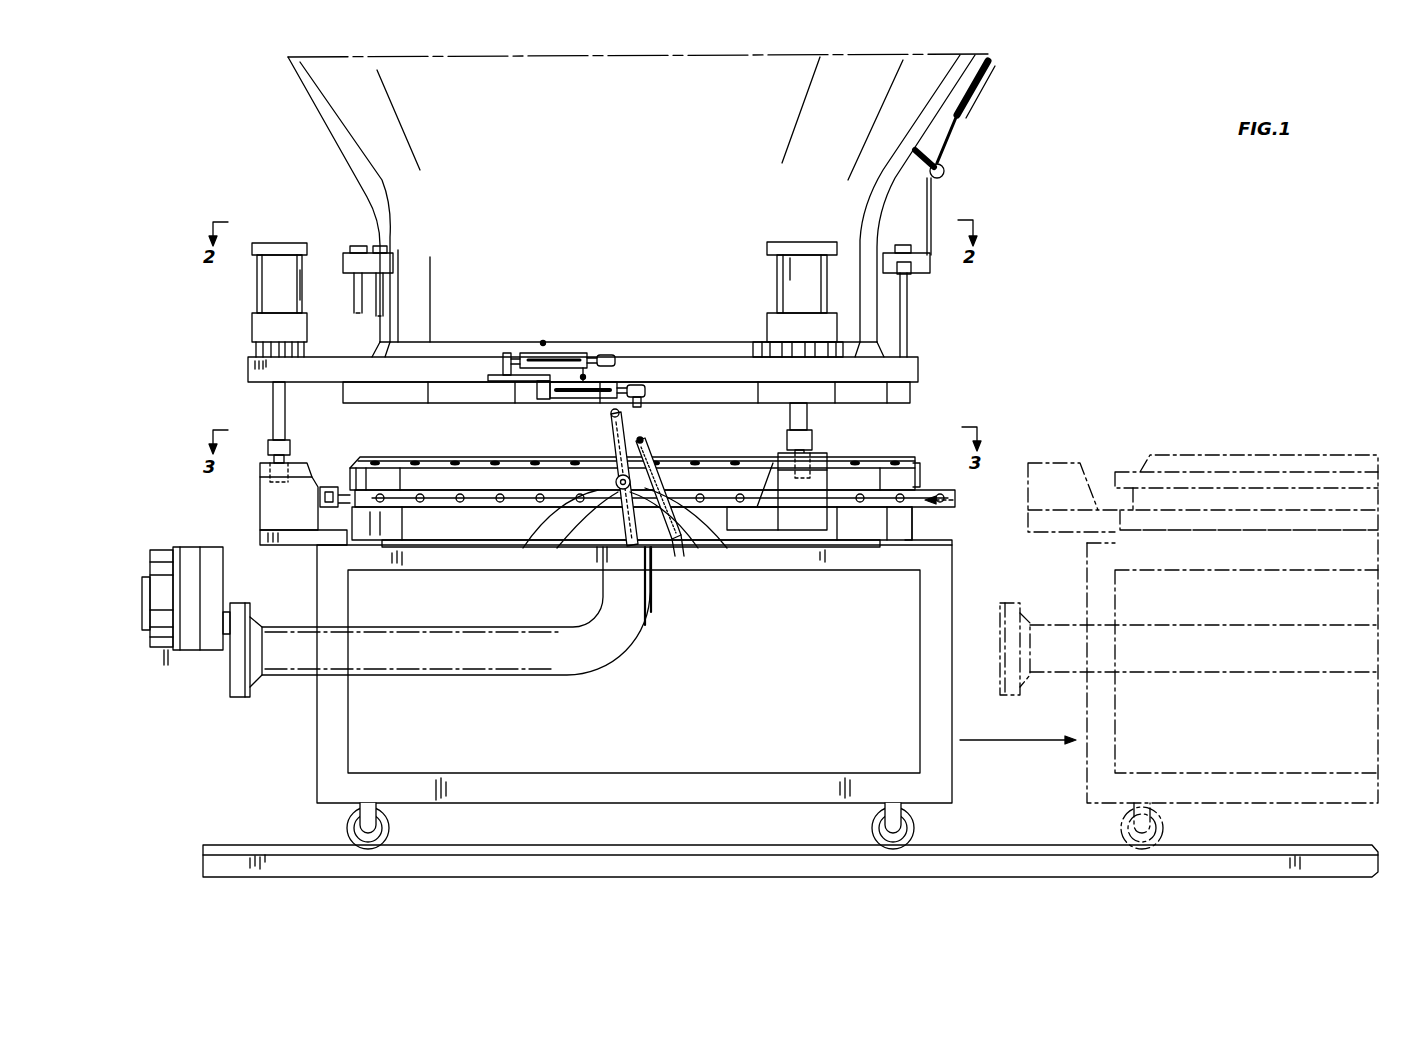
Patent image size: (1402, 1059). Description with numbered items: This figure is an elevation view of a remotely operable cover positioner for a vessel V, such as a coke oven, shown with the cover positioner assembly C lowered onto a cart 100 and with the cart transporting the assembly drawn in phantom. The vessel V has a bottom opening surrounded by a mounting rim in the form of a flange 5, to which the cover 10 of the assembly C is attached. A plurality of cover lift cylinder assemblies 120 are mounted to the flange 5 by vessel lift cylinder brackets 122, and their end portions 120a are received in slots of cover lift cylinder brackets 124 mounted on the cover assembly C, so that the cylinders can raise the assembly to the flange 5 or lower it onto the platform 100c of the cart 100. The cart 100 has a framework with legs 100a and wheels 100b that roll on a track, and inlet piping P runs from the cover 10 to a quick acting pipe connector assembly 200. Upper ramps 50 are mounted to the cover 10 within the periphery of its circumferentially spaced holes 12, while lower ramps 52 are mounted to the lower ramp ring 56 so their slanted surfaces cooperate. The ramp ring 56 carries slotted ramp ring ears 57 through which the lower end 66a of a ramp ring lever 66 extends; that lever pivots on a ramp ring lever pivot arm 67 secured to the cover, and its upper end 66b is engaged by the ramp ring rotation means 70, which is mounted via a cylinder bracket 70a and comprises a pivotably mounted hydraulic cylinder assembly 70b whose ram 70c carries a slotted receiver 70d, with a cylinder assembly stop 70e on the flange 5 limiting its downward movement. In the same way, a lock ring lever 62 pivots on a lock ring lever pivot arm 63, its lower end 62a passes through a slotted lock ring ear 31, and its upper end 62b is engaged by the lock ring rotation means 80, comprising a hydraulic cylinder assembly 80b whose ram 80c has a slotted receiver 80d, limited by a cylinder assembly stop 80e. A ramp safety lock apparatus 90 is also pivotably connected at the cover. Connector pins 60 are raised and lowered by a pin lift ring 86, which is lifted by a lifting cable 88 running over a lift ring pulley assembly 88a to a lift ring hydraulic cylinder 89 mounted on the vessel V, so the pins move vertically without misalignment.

The vessel V is at (295, 84).
The lift ring hydraulic cylinder 89 is at (981, 93).
The lift ring pulley assembly 88a is at (946, 168).
The lift ring lifting cable 88 is at (931, 207).
The pin lift ring 86 is at (345, 262).
The cover lift cylinder assembly 120 is at (250, 306).
The vessel lift cylinder bracket 122 is at (250, 366).
The flange 5 is at (352, 358).
The lock ring rotation means 80 is at (548, 352).
The hydraulic cylinder assembly 80b is at (525, 352).
The ram 80c is at (584, 374).
The slotted receiver 80d is at (608, 354).
The cylinder assembly stop 80e is at (544, 341).
The ramp ring rotation means 70 is at (576, 382).
The cylinder bracket 70a is at (503, 373).
The hydraulic cylinder assembly 70b is at (560, 402).
The ram 70c is at (628, 380).
The slotted receiver 70d is at (650, 382).
The cylinder assembly stop 70e is at (665, 395).
The connector pin 60 is at (908, 313).
The end portion 120a is at (268, 455).
The cover lift cylinder bracket 124 is at (260, 500).
The ramp safety lock apparatus 90 is at (329, 480).
The circumferentially spaced holes 12 is at (740, 460).
The upper ramps 50 is at (413, 493).
The cover 10 is at (912, 485).
The lower ramp ring 56 is at (524, 498).
The lower ramps 52 is at (481, 500).
The platform 100c is at (937, 544).
The lock ring lever 62 is at (557, 548).
The lower end 62a is at (650, 598).
The upper end 62b is at (610, 415).
The lock ring lever pivot arm 63 is at (523, 548).
The slotted lock ring ear 31 is at (584, 553).
The ramp ring lever 66 is at (656, 470).
The lower end 66a is at (676, 545).
The upper end 66b is at (652, 433).
The slotted ramp ring ear 57 is at (698, 548).
The ramp ring lever pivot arm 67 is at (727, 548).
The quick acting pipe connector assembly 200 is at (194, 669).
The inlet piping P is at (535, 684).
The cart 100 is at (954, 721).
The legs 100a is at (954, 781).
The wheels 100b is at (915, 828).
The cover positioner assembly C is at (948, 501).